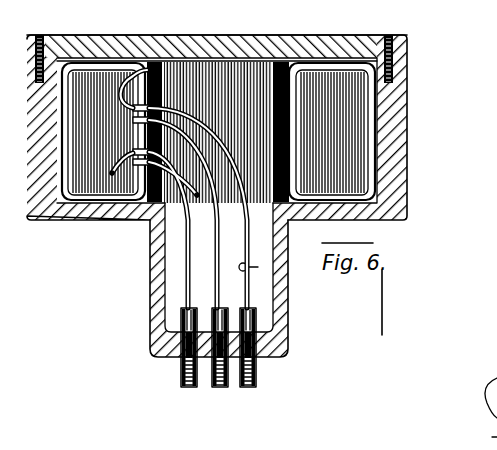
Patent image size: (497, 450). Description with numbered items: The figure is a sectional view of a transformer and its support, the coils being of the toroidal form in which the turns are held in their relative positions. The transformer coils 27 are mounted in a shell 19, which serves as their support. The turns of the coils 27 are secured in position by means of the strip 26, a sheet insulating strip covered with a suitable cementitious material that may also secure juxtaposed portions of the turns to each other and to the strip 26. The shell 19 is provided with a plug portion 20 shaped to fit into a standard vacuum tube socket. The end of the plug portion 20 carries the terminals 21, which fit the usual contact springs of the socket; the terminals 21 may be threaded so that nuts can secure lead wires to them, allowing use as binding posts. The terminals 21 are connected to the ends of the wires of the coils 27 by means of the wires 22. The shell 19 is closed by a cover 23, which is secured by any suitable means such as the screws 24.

The shell 19 is at (237, 111).
The plug portion 20 is at (288, 295).
The terminals 21 is at (210, 385).
The wires 22 is at (213, 251).
The cover 23 is at (332, 29).
The screws 24 is at (394, 36).
The strip 26 is at (293, 112).
The coils 27 is at (367, 90).